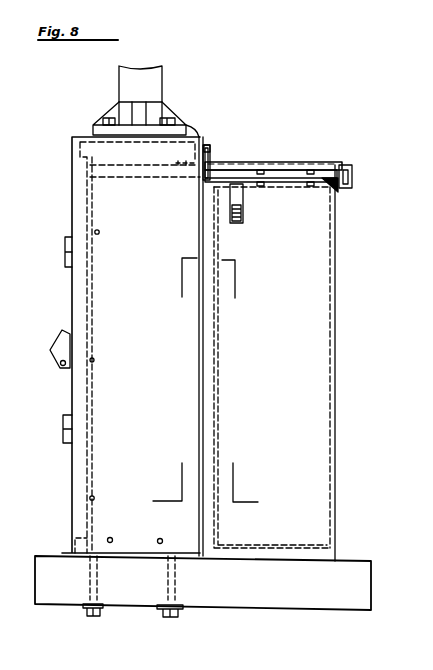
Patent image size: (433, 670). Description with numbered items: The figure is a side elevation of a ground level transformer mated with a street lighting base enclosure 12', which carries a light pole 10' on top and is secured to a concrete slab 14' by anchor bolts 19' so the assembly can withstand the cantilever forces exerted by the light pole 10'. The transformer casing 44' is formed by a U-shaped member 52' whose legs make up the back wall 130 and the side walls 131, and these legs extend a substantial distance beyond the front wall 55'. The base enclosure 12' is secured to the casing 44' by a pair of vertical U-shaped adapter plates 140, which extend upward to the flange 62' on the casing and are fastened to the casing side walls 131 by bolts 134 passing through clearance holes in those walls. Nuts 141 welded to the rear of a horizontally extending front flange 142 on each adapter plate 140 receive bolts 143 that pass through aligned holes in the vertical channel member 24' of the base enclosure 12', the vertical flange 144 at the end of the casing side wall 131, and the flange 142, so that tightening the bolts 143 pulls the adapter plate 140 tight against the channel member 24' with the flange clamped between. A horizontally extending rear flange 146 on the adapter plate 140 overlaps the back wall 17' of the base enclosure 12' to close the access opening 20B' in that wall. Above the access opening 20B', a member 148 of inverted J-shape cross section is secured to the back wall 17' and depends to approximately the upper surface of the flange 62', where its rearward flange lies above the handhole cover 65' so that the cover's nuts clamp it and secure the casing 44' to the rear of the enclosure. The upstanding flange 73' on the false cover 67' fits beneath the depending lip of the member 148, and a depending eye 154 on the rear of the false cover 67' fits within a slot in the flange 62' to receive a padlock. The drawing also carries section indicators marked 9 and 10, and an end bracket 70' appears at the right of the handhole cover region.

The light pole 10' is at (145, 90).
The street light base enclosure 12' is at (111, 321).
The back wall 17' is at (185, 113).
The member of inverted J-shape cross section 148 is at (210, 148).
The upstanding flange 73' is at (230, 161).
The false cover 67' is at (273, 127).
The handhole cover 65' is at (271, 149).
The end bracket 70' is at (372, 165).
The flange 62' is at (304, 200).
The depending eye 154 is at (340, 182).
The access opening 20B' is at (145, 153).
The vertical channel member 24' is at (47, 330).
The vertical U-shaped adapter plates 140 is at (135, 180).
The nuts 141 is at (94, 360).
The bolts 143 is at (94, 363).
The vertical flange 144 is at (92, 383).
The front flange 142 is at (92, 384).
The rear flange 146 is at (203, 335).
The side walls 131 is at (288, 364).
The back wall 130 is at (337, 332).
The transformer casing 44' is at (364, 376).
The front wall 55' is at (241, 415).
The U-shaped member 52' is at (312, 363).
The bolts 134 is at (158, 538).
The concrete slab 14' is at (208, 567).
The anchor bolts 19' is at (112, 599).
The section line 9- 9 is at (42, 527).
The section line 10- 10 is at (227, 176).